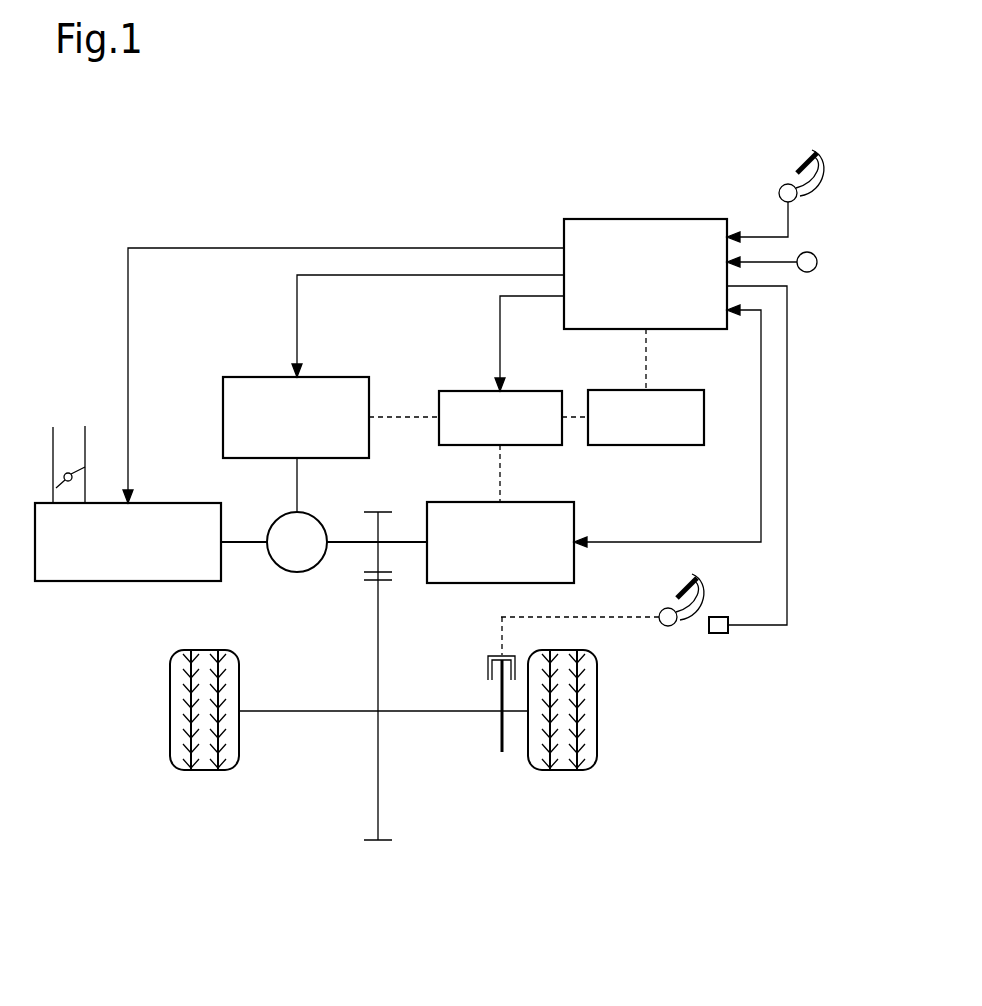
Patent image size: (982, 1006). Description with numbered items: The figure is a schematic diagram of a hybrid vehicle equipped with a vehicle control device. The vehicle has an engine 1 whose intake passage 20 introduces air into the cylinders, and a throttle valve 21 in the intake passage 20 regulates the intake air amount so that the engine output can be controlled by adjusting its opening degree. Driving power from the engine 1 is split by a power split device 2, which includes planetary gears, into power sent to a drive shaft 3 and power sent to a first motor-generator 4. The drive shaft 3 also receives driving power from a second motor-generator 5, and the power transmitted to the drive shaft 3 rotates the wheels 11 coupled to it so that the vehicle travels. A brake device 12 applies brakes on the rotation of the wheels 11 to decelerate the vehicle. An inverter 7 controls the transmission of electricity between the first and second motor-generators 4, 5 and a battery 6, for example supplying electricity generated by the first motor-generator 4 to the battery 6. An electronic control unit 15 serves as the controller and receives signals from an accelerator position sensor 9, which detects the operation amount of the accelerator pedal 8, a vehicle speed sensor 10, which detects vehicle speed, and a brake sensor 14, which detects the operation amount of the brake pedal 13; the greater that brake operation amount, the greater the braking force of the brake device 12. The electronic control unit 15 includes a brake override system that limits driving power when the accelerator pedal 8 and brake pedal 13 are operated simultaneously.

The engine 1 is at (195, 503).
The power split device 2 is at (278, 519).
The drive shaft 3 is at (425, 711).
The first motor-generator 4 is at (265, 377).
The second motor-generator 5 is at (462, 502).
The battery 6 is at (625, 390).
The inverter 7 is at (472, 391).
The accelerator pedal 8 is at (820, 158).
The accelerator position sensor 9 is at (778, 195).
The vehicle speed sensor 10 is at (815, 253).
The wheels 11 is at (170, 712).
The brake device 12 is at (488, 660).
The brake pedal 13 is at (700, 588).
The brake sensor 14 is at (720, 633).
The electronic control unit 15 is at (580, 219).
The intake passage 20 is at (53, 430).
The throttle valve 21 is at (62, 477).